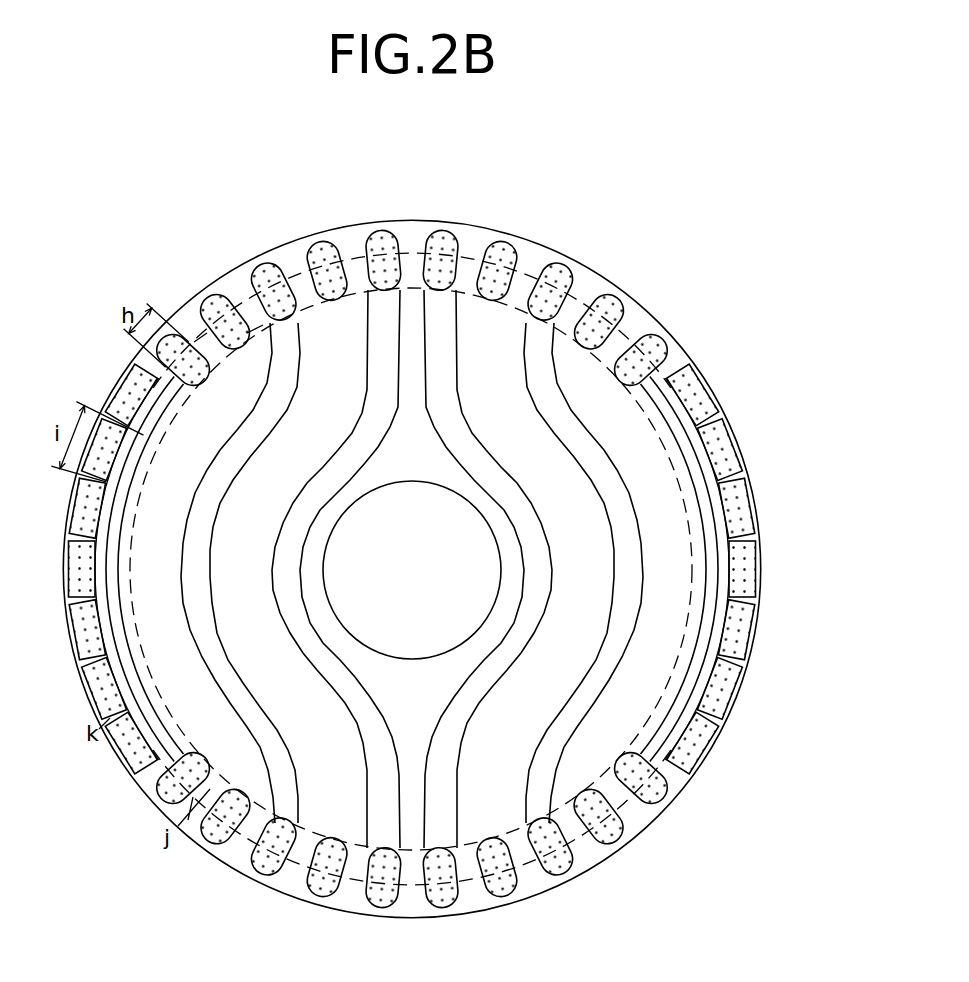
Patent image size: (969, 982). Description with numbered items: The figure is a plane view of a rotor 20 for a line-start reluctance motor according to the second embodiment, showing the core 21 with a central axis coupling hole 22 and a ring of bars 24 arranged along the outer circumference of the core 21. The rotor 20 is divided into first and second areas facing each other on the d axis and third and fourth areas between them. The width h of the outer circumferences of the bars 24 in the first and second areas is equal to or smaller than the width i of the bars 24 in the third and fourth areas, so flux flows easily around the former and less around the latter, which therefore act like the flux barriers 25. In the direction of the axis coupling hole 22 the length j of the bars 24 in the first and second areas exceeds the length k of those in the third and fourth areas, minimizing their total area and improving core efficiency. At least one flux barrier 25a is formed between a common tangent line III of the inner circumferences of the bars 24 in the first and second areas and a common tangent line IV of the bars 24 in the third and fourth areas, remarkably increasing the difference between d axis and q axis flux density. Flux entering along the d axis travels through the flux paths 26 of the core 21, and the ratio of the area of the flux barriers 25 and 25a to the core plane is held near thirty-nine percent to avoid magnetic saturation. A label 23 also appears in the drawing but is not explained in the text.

The rotor 20 is at (532, 193).
The core 21 is at (348, 242).
The axis coupling hole 22 is at (405, 659).
The slot 23 is at (568, 280).
The bar 24 is at (565, 282).
The flux barrier 25 is at (550, 742).
The flux barrier 25a is at (143, 437).
The flux path 26 is at (490, 778).
The common tangent line IV is at (202, 337).
The common tangent line III is at (253, 327).